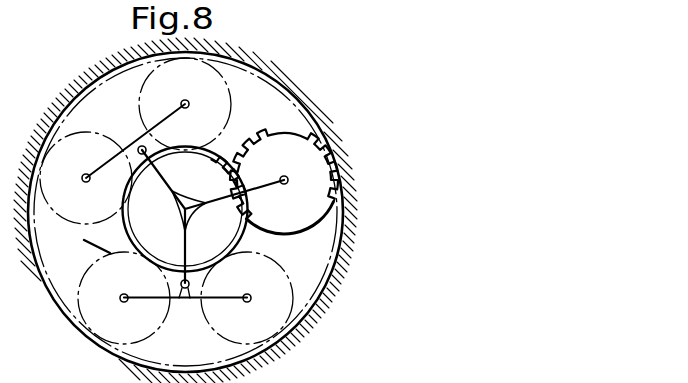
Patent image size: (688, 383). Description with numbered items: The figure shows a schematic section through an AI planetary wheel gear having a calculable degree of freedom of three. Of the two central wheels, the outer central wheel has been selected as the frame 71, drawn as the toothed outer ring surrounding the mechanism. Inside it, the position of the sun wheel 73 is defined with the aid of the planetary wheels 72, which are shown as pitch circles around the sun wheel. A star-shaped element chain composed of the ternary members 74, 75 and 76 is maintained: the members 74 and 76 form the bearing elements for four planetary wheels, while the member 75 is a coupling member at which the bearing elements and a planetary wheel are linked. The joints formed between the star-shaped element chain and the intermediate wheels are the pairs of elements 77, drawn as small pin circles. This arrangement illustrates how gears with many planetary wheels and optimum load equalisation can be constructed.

The frame 71 is at (338, 279).
The planetary wheels 72 is at (238, 107).
The sun wheel 73 is at (243, 227).
The ternary member 74 is at (141, 145).
The coupling member 75 is at (182, 210).
The ternary member 76 is at (176, 300).
The pairs of elements 77 is at (188, 101).